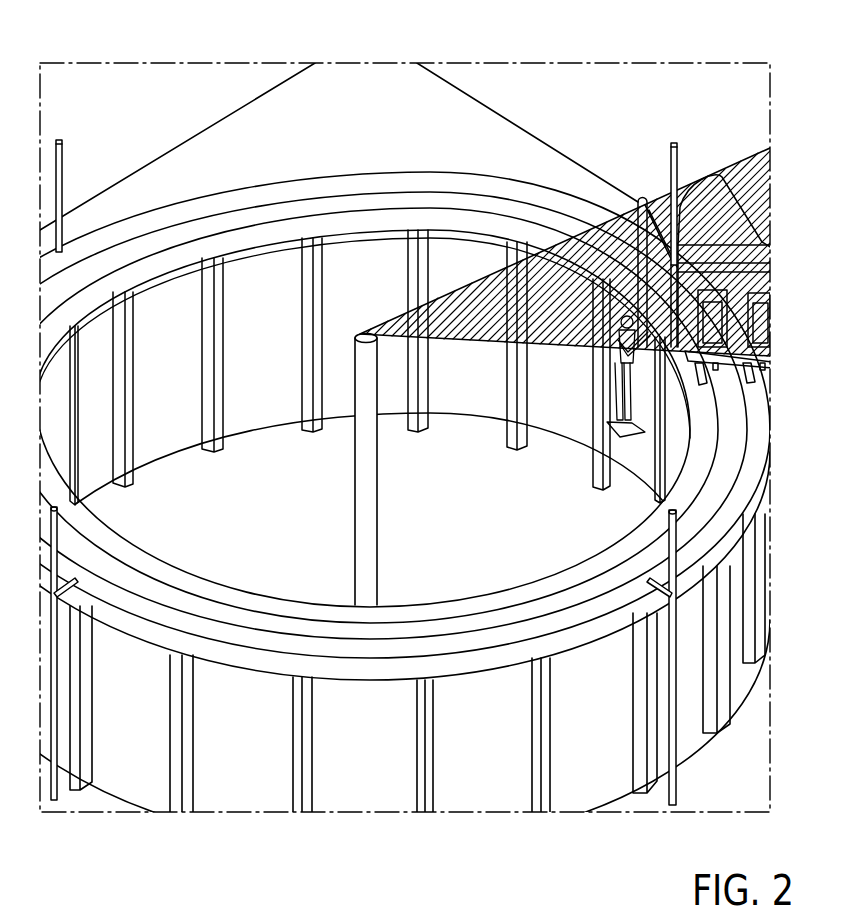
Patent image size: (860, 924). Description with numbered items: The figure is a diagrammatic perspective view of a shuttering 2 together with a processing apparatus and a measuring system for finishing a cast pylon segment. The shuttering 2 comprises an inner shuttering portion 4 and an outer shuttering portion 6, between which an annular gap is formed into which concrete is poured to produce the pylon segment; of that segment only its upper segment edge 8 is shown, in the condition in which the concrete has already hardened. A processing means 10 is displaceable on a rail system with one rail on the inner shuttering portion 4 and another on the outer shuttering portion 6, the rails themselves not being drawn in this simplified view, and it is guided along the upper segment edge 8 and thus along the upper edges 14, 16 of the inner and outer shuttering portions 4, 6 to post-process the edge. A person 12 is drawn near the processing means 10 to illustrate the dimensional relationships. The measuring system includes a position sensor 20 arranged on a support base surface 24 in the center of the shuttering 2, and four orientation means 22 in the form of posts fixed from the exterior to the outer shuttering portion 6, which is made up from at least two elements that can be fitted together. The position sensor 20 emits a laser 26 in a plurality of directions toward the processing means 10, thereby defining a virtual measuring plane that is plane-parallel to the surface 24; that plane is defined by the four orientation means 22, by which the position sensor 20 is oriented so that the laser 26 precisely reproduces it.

The shuttering 2 is at (498, 775).
The inner shuttering portion 4 is at (272, 268).
The outer shuttering portion 6 is at (348, 185).
The upper segment edge 8 is at (378, 200).
The processing means 10 is at (725, 130).
The person 12 is at (615, 384).
The upper edge of the inner shuttering portion 14 is at (680, 492).
The upper edge of the outer shuttering portion 16 is at (748, 475).
The position sensor 20 is at (362, 500).
The orientation means 22 is at (63, 152).
The support base surface 24 is at (313, 546).
The laser 26 is at (388, 318).